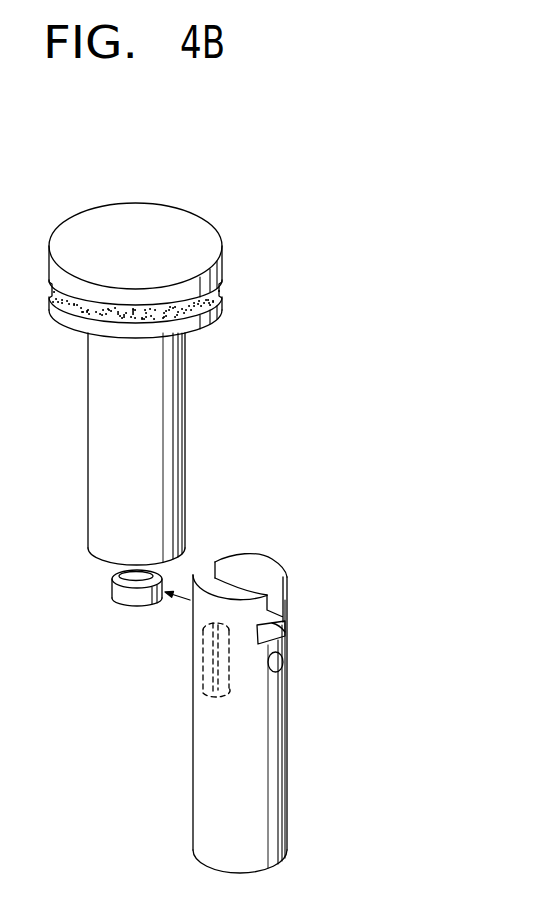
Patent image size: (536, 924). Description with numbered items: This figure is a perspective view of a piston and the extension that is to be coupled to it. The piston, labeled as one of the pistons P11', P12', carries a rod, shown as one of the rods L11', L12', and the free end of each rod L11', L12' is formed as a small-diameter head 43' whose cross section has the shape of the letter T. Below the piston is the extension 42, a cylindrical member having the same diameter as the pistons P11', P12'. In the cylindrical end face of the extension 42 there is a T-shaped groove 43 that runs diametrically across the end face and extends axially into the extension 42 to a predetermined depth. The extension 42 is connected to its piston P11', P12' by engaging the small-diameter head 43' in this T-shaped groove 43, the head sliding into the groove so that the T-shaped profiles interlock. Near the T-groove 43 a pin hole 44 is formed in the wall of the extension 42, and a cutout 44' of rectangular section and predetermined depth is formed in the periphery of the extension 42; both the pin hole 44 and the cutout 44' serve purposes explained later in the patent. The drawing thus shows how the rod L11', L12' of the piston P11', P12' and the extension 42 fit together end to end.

The piston P11' is at (186, 244).
The piston P12' is at (186, 244).
The rod L11' is at (201, 449).
The rod L12' is at (201, 449).
The small-diameter head 43' is at (99, 593).
The cutout 44' is at (158, 665).
The extension 42 is at (190, 794).
The T-shaped groove 43 is at (302, 636).
The pin hole 44 is at (306, 685).